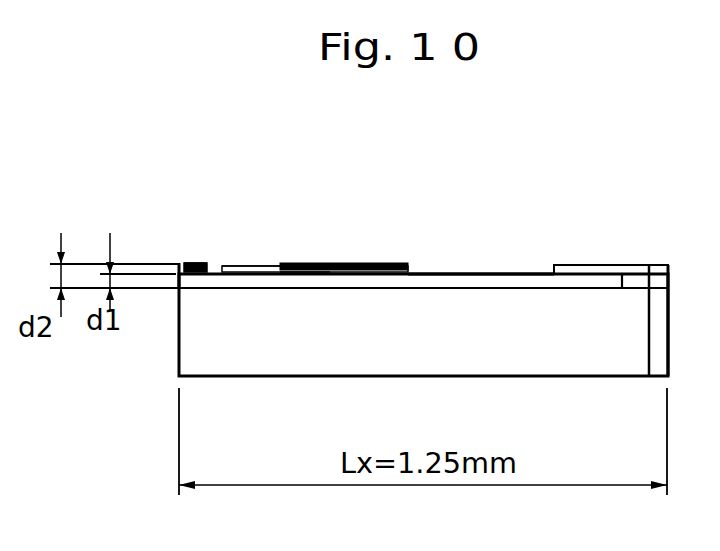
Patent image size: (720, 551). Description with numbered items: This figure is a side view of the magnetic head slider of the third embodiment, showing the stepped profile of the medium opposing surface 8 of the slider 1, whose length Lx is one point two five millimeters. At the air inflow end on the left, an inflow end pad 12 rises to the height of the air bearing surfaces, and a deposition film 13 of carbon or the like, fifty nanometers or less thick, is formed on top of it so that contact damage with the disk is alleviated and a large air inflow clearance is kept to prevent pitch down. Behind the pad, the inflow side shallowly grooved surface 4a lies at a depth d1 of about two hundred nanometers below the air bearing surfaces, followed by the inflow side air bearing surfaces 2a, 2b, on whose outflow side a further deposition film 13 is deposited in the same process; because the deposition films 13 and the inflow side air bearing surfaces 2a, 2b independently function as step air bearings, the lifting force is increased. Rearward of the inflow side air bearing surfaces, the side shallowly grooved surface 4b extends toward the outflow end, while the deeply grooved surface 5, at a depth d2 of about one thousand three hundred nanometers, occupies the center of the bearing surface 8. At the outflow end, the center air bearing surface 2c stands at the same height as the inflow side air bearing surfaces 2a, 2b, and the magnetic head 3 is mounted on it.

The slider 1 is at (277, 362).
The inflow side air bearing surface 2a is at (240, 265).
The inflow side air bearing surface 2b is at (278, 265).
The center air bearing surface 2c is at (592, 266).
The magnetic head 3 is at (655, 266).
The inflow side shallowly grooved surface 4a is at (181, 263).
The side shallowly grooved surface 4b is at (438, 273).
The deeply grooved surface 5 is at (507, 273).
The medium opposing surface 8 is at (298, 265).
The inflow end pad 12 is at (194, 263).
The deposition film 13 is at (206, 264).